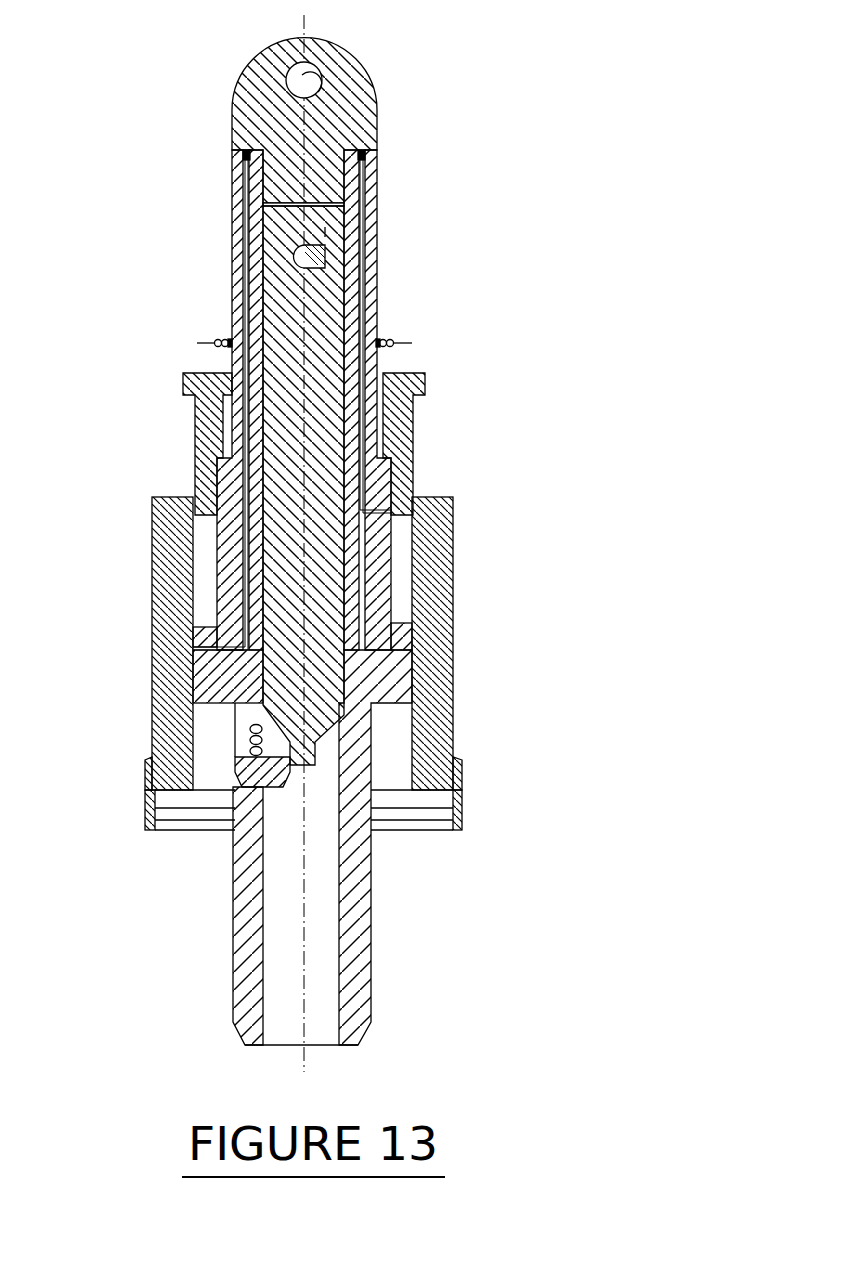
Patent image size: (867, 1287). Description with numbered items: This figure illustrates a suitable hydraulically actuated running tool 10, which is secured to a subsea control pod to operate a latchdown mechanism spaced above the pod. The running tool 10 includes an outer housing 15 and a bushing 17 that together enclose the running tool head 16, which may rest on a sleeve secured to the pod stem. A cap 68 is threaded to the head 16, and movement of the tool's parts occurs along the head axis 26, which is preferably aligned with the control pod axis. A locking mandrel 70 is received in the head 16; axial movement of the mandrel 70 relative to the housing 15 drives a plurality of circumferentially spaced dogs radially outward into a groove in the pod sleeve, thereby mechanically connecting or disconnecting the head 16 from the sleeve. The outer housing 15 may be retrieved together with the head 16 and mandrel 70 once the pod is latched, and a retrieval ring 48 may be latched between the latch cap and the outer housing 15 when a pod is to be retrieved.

The running tool 10 is at (354, 543).
The outer housing 15 is at (180, 550).
The running tool head 16 is at (353, 648).
The bushing 17 is at (197, 413).
The head axis 26 is at (305, 332).
The retrieval ring 48 is at (148, 763).
The cap 68 is at (347, 122).
The locking mandrel 70 is at (330, 405).